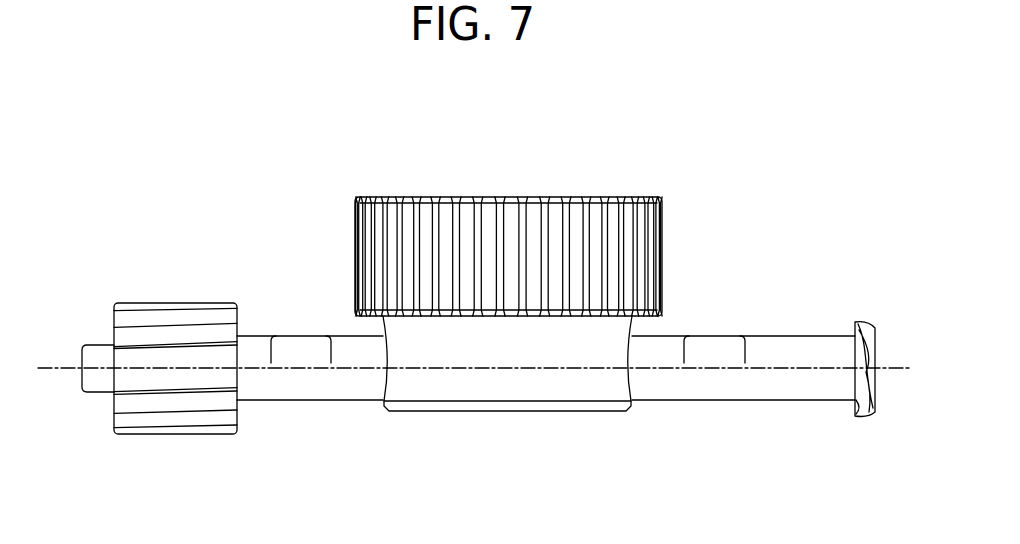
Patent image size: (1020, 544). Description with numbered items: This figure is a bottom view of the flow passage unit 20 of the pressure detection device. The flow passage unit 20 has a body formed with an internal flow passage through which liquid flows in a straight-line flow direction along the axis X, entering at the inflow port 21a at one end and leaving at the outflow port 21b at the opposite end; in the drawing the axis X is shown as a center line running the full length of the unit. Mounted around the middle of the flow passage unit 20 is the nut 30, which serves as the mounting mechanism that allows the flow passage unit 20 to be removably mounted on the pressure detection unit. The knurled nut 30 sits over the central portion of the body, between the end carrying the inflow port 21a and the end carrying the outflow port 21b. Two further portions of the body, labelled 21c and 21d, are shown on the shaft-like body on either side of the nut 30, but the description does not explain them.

The flow passage unit 20 is at (482, 307).
The inflow port 21a is at (866, 414).
The outflow port 21b is at (92, 393).
The first engaging portion 21c is at (712, 335).
The second engaging portion 21d is at (300, 335).
The nut 30 is at (590, 197).
The axis X is at (46, 367).